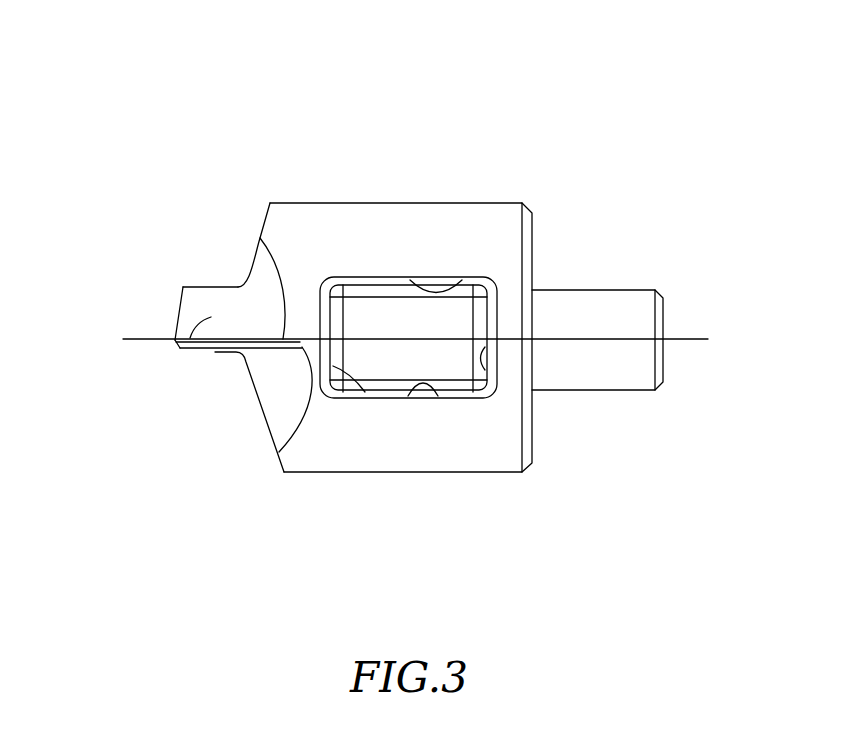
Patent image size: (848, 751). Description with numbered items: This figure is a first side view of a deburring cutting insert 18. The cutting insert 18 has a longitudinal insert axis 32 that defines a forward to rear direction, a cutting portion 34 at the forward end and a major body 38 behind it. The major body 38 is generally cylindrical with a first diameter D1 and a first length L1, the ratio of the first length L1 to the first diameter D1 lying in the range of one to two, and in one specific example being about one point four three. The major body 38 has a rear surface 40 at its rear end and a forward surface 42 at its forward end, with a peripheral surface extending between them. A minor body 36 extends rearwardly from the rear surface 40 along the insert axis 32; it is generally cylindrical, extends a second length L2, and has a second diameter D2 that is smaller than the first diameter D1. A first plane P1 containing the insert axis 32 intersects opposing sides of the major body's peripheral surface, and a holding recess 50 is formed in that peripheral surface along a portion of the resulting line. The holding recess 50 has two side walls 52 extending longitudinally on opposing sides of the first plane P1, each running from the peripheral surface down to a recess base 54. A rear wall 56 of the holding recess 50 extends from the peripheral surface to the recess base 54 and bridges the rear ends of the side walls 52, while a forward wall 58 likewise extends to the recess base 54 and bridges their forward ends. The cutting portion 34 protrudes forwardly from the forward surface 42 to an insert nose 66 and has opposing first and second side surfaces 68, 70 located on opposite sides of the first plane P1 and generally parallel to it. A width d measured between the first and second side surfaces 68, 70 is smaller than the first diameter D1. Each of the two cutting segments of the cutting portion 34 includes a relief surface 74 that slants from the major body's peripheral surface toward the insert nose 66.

The cutting insert 18 is at (115, 85).
The insert axis 32 is at (673, 340).
The cutting portion 34 is at (187, 301).
The minor body 36 is at (640, 283).
The major body 38 is at (450, 198).
The rear surface 40 is at (533, 224).
The forward surface 42 is at (261, 430).
The holding recess 50 is at (358, 312).
The side walls 52 is at (475, 279).
The recess base 54 is at (383, 313).
The rear wall 56 is at (492, 381).
The forward wall 58 is at (332, 366).
The insert nose 66 is at (177, 313).
The first side surface 68 is at (193, 283).
The second side surface 70 is at (172, 355).
The relief surface 74 is at (185, 352).
The width d is at (215, 415).
The first diameter D1 is at (398, 195).
The second diameter D2 is at (615, 452).
The first length L1 is at (528, 517).
The second length L2 is at (662, 392).
The first plane P1 is at (692, 339).